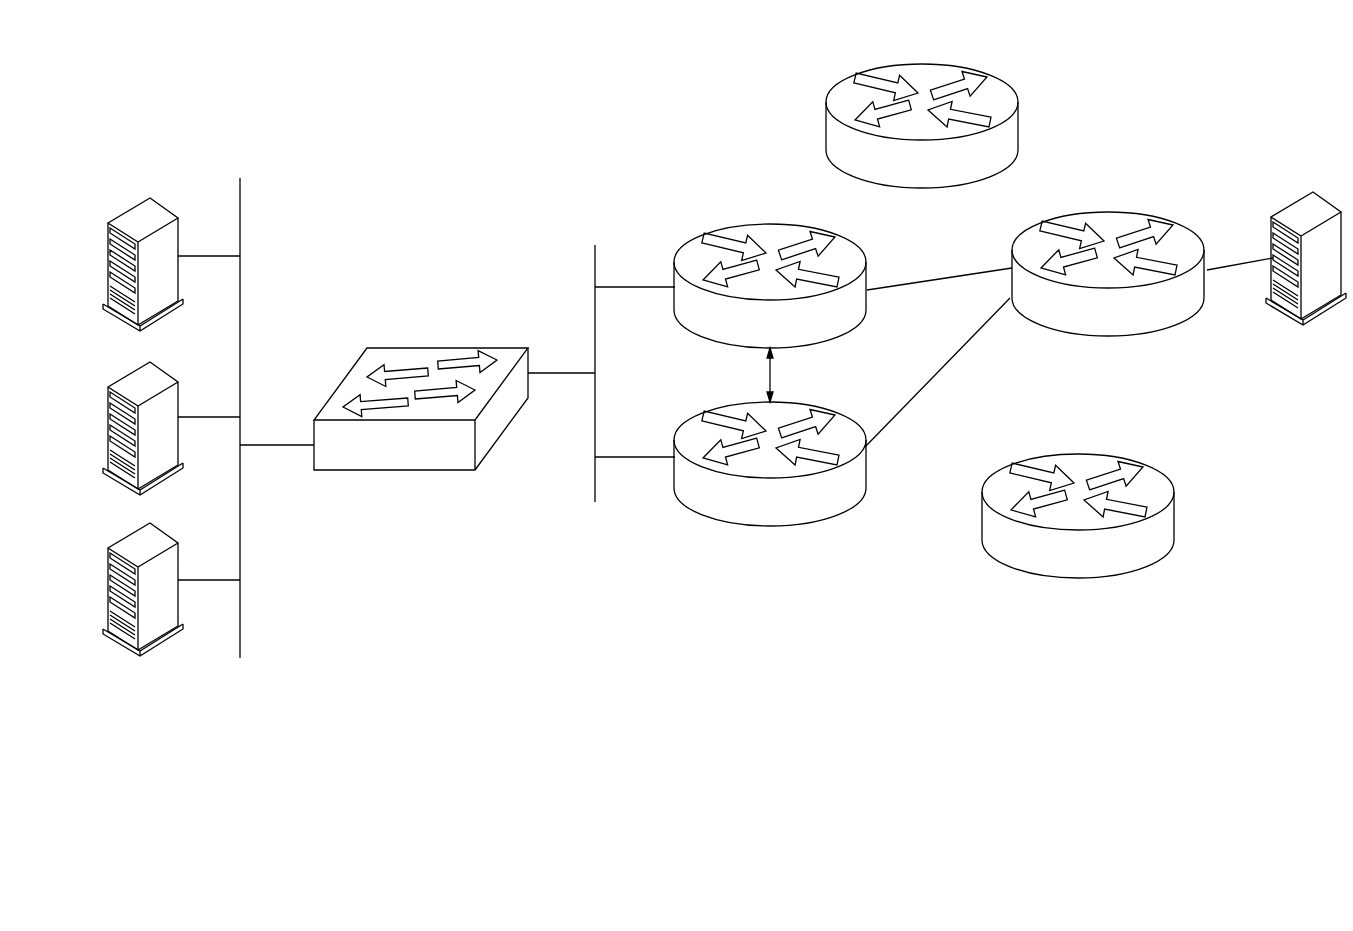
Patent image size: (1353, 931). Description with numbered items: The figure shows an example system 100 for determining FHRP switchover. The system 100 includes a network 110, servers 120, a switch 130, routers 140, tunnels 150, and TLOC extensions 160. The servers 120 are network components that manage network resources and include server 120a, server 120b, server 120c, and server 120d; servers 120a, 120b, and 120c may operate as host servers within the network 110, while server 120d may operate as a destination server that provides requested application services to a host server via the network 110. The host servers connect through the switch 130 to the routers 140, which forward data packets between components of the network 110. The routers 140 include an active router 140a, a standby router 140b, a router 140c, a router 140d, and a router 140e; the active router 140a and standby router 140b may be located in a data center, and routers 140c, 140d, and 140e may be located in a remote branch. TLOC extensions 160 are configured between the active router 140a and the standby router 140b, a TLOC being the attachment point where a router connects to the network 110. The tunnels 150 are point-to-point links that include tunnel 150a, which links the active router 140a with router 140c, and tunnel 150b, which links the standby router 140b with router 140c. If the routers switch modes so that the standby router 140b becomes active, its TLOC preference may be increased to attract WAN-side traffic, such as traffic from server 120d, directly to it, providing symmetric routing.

The system 100 is at (431, 55).
The network 110 is at (928, 330).
The servers 120 is at (186, 139).
The server 120a is at (124, 218).
The server 120b is at (124, 380).
The server 120c is at (124, 543).
The server 120d is at (1288, 316).
The switch 130 is at (487, 458).
The routers 140 is at (748, 90).
The active router 140a is at (702, 344).
The standby router 140b is at (698, 513).
The router 140c is at (1180, 340).
The router 140d is at (1005, 172).
The router 140e is at (1158, 566).
The tunnels 150 is at (886, 298).
The tunnel 150a is at (953, 272).
The tunnel 150b is at (982, 332).
The TLOC extensions 160 is at (768, 372).